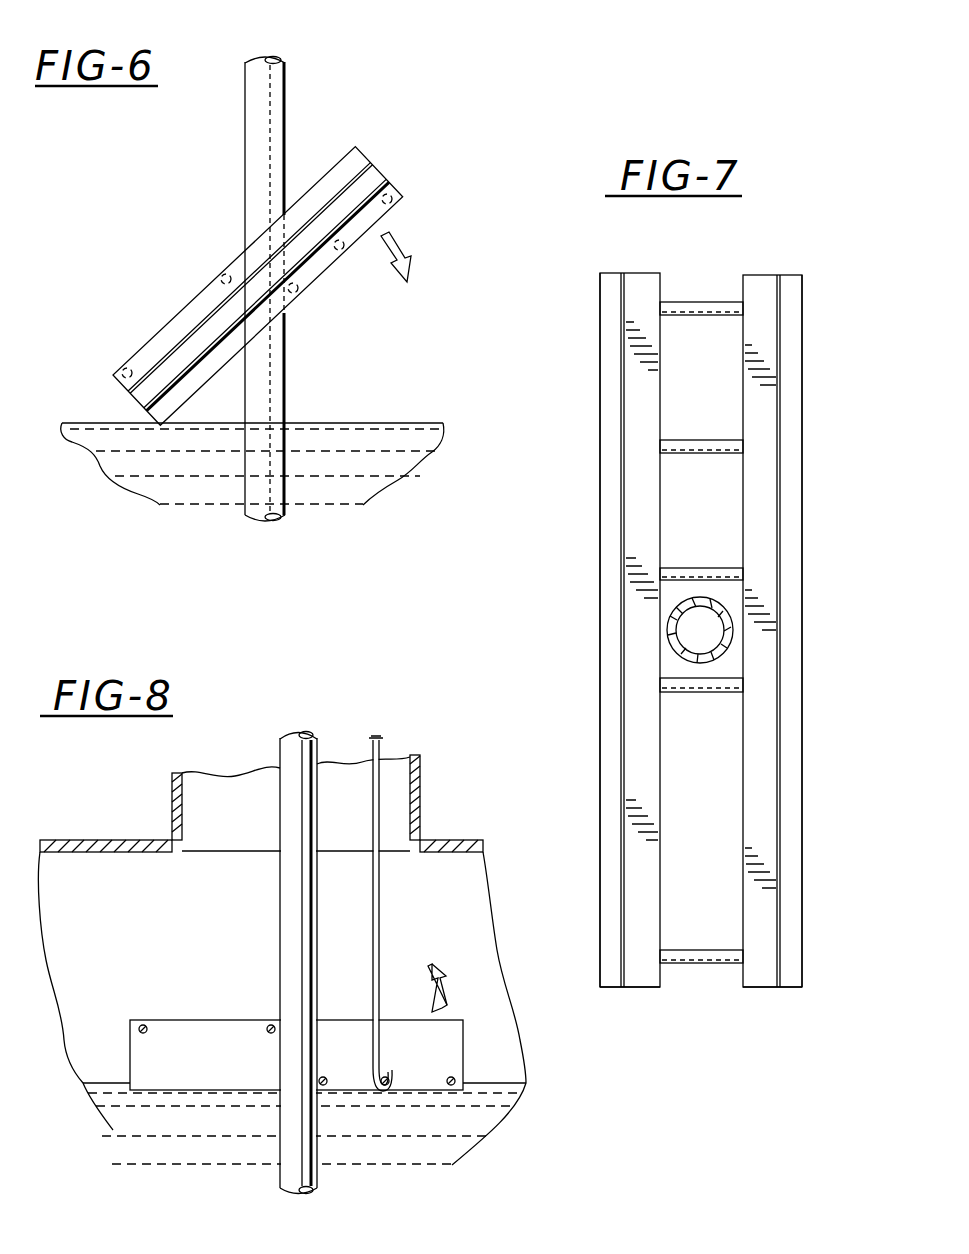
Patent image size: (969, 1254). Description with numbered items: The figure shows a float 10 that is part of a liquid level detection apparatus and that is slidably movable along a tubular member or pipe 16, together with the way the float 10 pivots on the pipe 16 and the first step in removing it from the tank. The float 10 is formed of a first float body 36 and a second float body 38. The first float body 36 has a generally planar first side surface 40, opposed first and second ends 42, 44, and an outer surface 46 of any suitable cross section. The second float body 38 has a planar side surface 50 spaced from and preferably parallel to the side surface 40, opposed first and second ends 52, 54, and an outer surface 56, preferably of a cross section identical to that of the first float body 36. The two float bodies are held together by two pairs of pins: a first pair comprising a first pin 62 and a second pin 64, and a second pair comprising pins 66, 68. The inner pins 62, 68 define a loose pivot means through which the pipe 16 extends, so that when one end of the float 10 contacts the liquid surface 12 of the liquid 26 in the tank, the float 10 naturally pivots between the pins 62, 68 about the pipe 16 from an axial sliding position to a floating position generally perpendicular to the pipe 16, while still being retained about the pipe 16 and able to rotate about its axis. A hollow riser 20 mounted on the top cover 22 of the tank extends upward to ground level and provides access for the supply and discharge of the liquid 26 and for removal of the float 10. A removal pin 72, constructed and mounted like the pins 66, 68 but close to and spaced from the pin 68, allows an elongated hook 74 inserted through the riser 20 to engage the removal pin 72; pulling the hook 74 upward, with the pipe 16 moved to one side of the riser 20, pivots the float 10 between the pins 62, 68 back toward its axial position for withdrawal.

In FIG. 6, the float 10 is at (146, 260).
In FIG. 7, the float 10 is at (585, 476).
In FIG. 8, the float 10 is at (156, 984).
In FIG. 6, the liquid surface 12 is at (386, 423).
In FIG. 8, the liquid surface 12 is at (524, 1085).
In FIG. 6, the pipe 16 is at (286, 92).
In FIG. 7, the pipe 16 is at (678, 660).
In FIG. 8, the pipe 16 is at (280, 824).
In FIG. 8, the riser 20 is at (170, 802).
In FIG. 8, the top cover 22 is at (452, 840).
In FIG. 6, the liquid 26 is at (385, 462).
In FIG. 8, the liquid 26 is at (453, 1126).
In FIG. 7, the first float body 36 is at (596, 657).
In FIG. 6, the second float body 38 is at (346, 158).
In FIG. 7, the second float body 38 is at (767, 628).
In FIG. 8, the second float body 38 is at (296, 1055).
In FIG. 7, the first side surface 40 is at (622, 804).
In FIG. 7, the first end 42 is at (601, 657).
In FIG. 7, the second end 44 is at (648, 988).
In FIG. 7, the outer surface 46 is at (599, 712).
In FIG. 7, the side surface 50 is at (741, 826).
In FIG. 7, the first end 52 is at (767, 628).
In FIG. 7, the second end 54 is at (775, 988).
In FIG. 7, the outer surface 56 is at (808, 740).
In FIG. 6, the first pin 62 is at (222, 275).
In FIG. 7, the first pin 62 is at (705, 694).
In FIG. 8, the first pin 62 is at (268, 1027).
In FIG. 6, the second pin 64 is at (126, 368).
In FIG. 7, the second pin 64 is at (705, 965).
In FIG. 8, the second pin 64 is at (138, 1030).
In FIG. 6, the pin 66 is at (392, 204).
In FIG. 7, the pin 66 is at (706, 300).
In FIG. 8, the pin 66 is at (472, 1078).
In FIG. 6, the pin 68 is at (296, 293).
In FIG. 7, the pin 68 is at (703, 566).
In FIG. 8, the pin 68 is at (325, 1077).
In FIG. 6, the removal pin 72 is at (341, 250).
In FIG. 7, the removal pin 72 is at (698, 438).
In FIG. 8, the removal pin 72 is at (390, 1068).
In FIG. 8, the elongated hook 74 is at (384, 745).